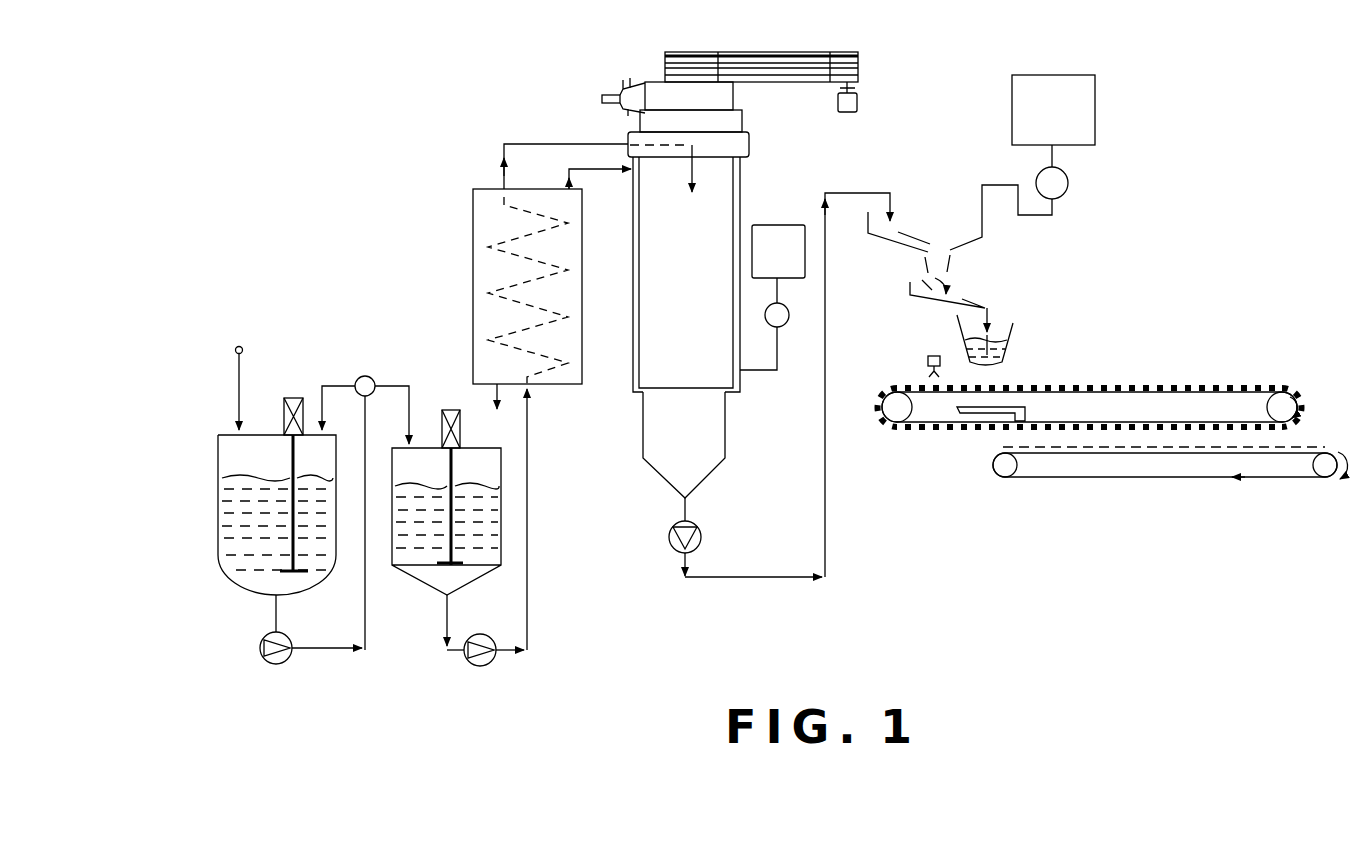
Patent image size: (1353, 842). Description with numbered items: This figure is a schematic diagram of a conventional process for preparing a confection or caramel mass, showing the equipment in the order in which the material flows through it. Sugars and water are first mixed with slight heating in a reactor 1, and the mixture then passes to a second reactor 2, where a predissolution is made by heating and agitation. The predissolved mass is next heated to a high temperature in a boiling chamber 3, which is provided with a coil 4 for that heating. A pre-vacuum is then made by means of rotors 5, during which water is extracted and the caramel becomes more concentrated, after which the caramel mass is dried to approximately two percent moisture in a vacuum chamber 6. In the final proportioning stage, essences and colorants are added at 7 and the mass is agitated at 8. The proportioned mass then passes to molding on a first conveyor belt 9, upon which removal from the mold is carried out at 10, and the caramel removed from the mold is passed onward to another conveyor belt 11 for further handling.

The reactor 1 is at (212, 498).
The reactor 2 is at (429, 594).
The boiling chamber 3 is at (458, 251).
The coil 4 is at (537, 292).
The rotors 5 is at (622, 93).
The vacuum chamber 6 is at (704, 221).
The essence and colorant addition point 7 is at (963, 277).
The agitation point 8 is at (1018, 350).
The first conveyor belt 9 is at (1184, 384).
The mold removal point 10 is at (985, 431).
The conveyor belt 11 is at (1145, 480).